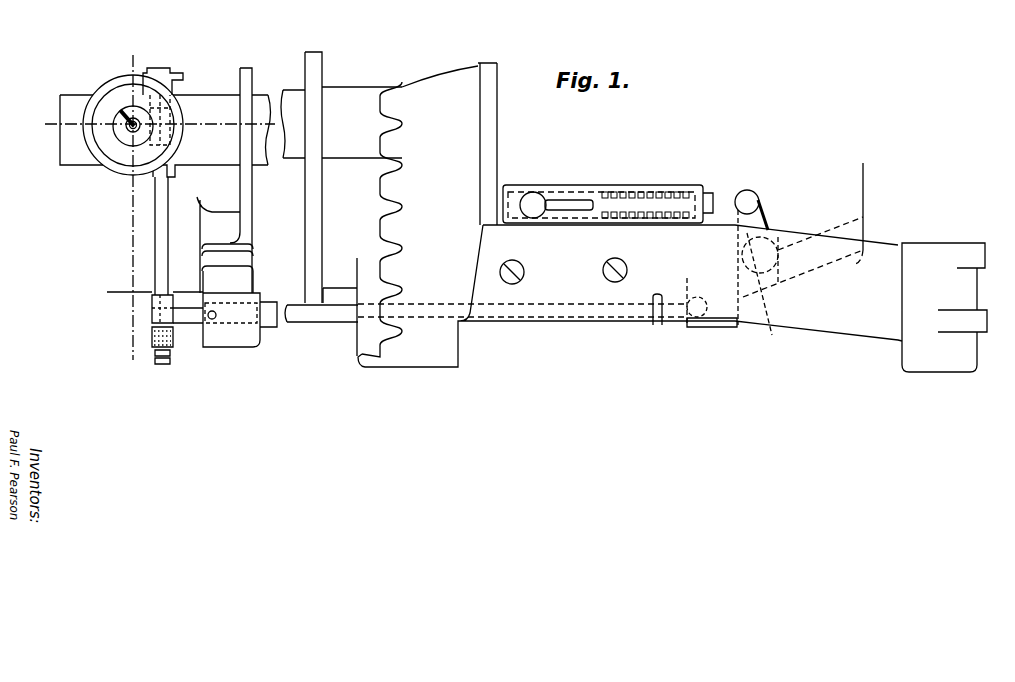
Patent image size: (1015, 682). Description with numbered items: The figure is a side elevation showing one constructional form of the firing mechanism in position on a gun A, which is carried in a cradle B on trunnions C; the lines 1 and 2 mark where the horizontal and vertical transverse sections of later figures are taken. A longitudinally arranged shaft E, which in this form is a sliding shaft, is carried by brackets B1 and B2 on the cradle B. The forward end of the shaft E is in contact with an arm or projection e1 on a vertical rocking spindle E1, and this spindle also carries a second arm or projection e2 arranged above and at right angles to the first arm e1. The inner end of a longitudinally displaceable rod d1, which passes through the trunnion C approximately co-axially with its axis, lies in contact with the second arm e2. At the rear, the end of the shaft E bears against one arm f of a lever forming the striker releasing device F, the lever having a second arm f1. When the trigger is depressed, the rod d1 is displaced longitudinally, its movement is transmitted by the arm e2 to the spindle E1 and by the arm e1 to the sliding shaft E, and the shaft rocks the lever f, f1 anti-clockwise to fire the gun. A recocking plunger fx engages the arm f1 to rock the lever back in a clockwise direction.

The section line 1- 1 is at (158, 124).
The section line 2- 2 is at (130, 210).
The gun A is at (672, 217).
The cradle B is at (341, 204).
The bracket B1 is at (702, 324).
The bracket B2 is at (236, 338).
The trunnion C is at (162, 110).
The longitudinally displaceable rod d1 is at (122, 112).
The longitudinally arranged shaft E is at (305, 320).
The vertical rocking spindle E1 is at (157, 220).
The arm or projection e1 is at (152, 318).
The second arm or projection e2 is at (150, 78).
The striker releasing device F is at (863, 220).
The arm of striker releasing lever f is at (753, 300).
The arm of striker releasing lever f1 is at (757, 220).
The recocking plunger fx is at (710, 197).